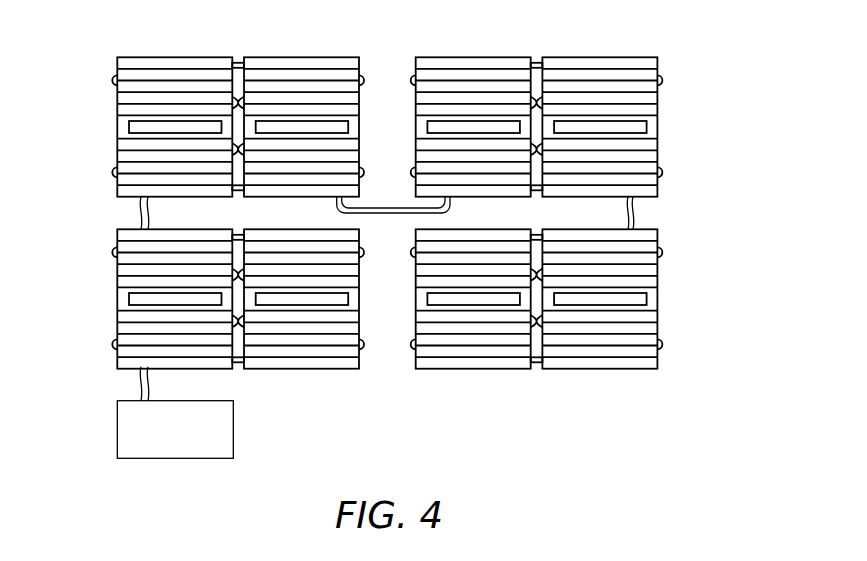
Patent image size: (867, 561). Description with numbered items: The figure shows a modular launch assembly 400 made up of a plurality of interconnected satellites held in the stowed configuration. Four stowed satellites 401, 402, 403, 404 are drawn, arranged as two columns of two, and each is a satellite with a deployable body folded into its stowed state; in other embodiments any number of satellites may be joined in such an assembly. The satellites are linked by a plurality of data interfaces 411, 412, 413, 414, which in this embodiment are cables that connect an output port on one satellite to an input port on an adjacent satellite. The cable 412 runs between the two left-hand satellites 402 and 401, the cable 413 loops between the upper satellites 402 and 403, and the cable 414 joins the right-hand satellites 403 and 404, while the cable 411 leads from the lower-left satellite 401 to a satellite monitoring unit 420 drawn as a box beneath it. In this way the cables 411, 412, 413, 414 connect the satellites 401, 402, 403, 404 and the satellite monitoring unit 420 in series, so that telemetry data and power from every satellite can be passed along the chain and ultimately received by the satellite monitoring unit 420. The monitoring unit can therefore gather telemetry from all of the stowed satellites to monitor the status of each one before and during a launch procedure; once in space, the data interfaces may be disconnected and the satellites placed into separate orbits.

The modular launch assembly 400 is at (655, 427).
The stowed satellite 401 is at (129, 298).
The stowed satellite 402 is at (129, 127).
The stowed satellite 403 is at (650, 127).
The stowed satellite 404 is at (650, 298).
The data interface 411 is at (141, 386).
The data interface 412 is at (141, 212).
The data interface 413 is at (388, 208).
The data interface 414 is at (633, 212).
The satellite monitoring unit 420 is at (148, 442).